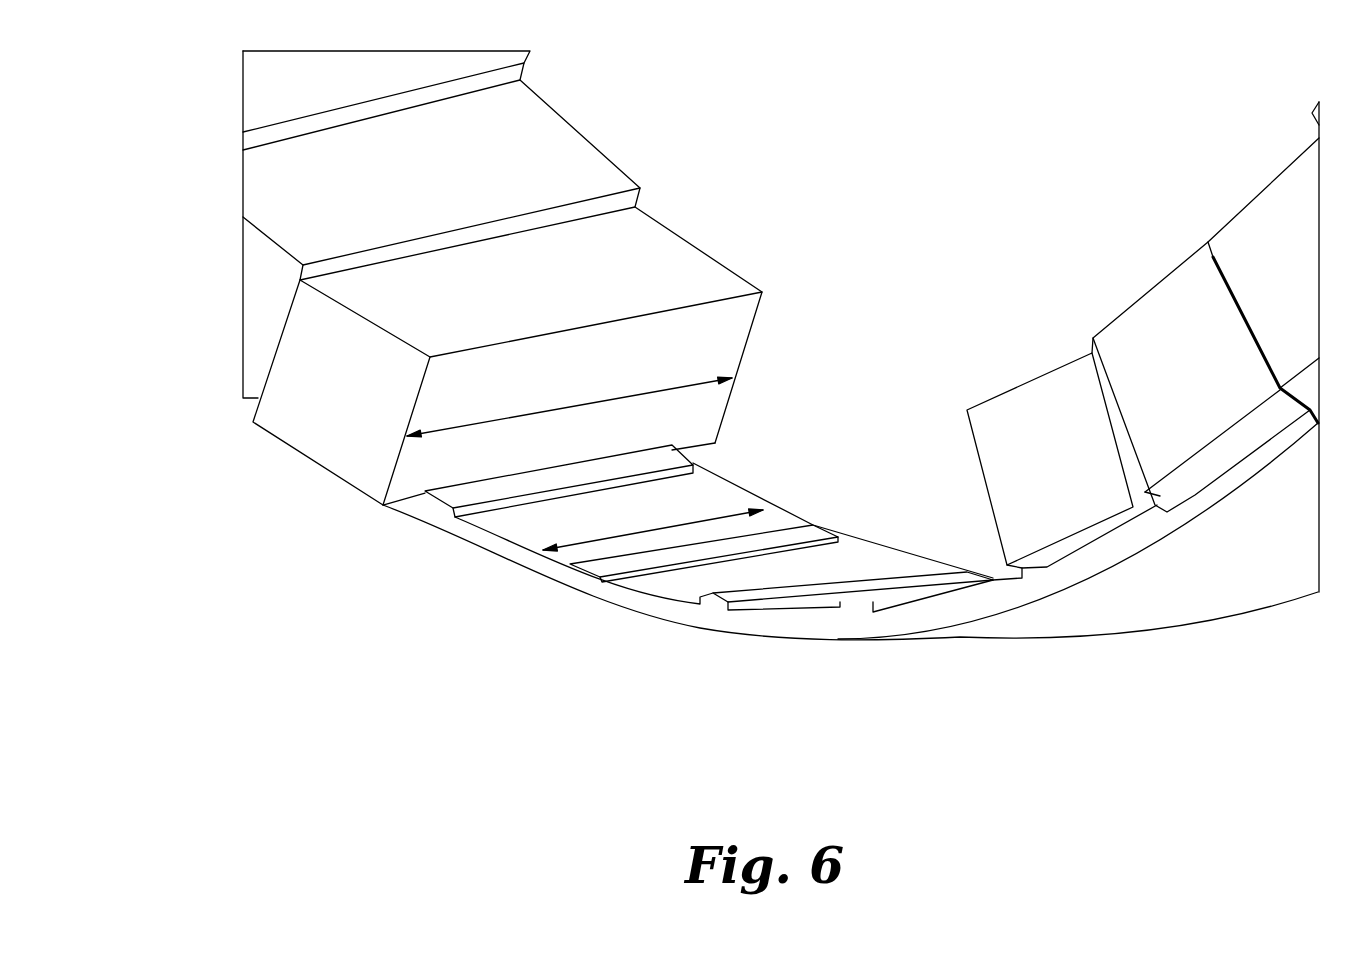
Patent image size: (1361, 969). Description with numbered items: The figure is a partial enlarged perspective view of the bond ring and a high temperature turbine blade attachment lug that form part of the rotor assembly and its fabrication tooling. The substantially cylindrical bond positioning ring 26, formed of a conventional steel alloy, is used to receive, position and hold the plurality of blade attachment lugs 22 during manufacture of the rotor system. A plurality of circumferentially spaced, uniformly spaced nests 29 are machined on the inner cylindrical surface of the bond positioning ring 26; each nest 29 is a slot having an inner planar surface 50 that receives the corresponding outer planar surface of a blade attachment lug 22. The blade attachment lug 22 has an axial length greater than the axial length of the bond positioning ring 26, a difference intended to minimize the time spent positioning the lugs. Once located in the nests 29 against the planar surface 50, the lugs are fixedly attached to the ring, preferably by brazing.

The blade attachment lug 22 is at (295, 415).
The bond positioning ring 26 is at (560, 580).
The nest 29 is at (510, 523).
The inner planar surface 50 is at (713, 497).